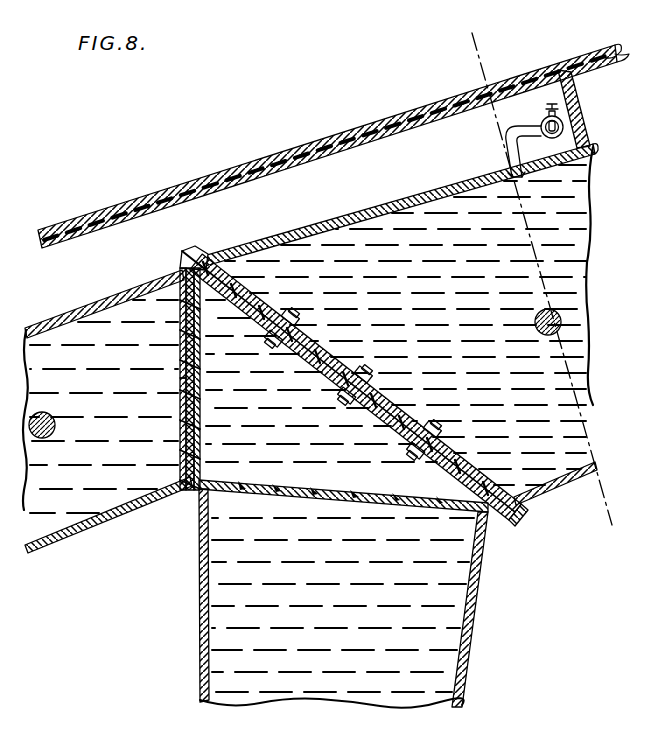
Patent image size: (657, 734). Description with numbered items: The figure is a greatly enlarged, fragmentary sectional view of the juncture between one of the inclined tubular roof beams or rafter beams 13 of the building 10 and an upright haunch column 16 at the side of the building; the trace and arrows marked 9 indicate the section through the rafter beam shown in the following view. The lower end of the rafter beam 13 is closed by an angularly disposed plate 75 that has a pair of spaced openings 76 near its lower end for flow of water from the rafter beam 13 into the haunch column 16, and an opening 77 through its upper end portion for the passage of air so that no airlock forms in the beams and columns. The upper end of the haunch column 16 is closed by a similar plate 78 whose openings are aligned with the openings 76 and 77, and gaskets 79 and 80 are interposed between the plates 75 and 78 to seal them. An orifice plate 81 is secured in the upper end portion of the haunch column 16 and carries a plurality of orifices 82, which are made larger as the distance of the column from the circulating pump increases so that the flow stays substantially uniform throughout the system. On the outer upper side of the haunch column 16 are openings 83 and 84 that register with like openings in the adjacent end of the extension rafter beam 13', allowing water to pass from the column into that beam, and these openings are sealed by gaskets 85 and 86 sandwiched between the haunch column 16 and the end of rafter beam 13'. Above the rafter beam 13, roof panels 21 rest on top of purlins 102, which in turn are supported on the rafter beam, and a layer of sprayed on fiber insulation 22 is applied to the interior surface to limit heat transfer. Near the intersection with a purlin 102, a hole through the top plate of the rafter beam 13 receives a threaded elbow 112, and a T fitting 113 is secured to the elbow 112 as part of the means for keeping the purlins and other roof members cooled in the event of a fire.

The section line 9- 9 is at (450, 62).
The building 10 is at (651, 136).
The rafter beam 13 is at (555, 501).
The extension rafter beam 13' is at (108, 531).
The haunch column 16 is at (484, 595).
The roof panel 21 is at (325, 139).
The sprayed on fiber insulation 22 is at (256, 181).
The angularly disposed plate 75 is at (387, 396).
The openings 76 is at (478, 478).
The opening 77 is at (248, 294).
The plate 78 is at (313, 366).
The gasket 79 is at (411, 459).
The gasket 80 is at (304, 332).
The orifice plate 81 is at (322, 490).
The orifices 82 is at (238, 490).
The opening 83 is at (206, 452).
The opening 84 is at (203, 310).
The gasket 85 is at (187, 405).
The gasket 86 is at (182, 352).
The purlin 102 is at (574, 97).
The threaded elbow 112 is at (505, 147).
The T fitting 113 is at (545, 120).